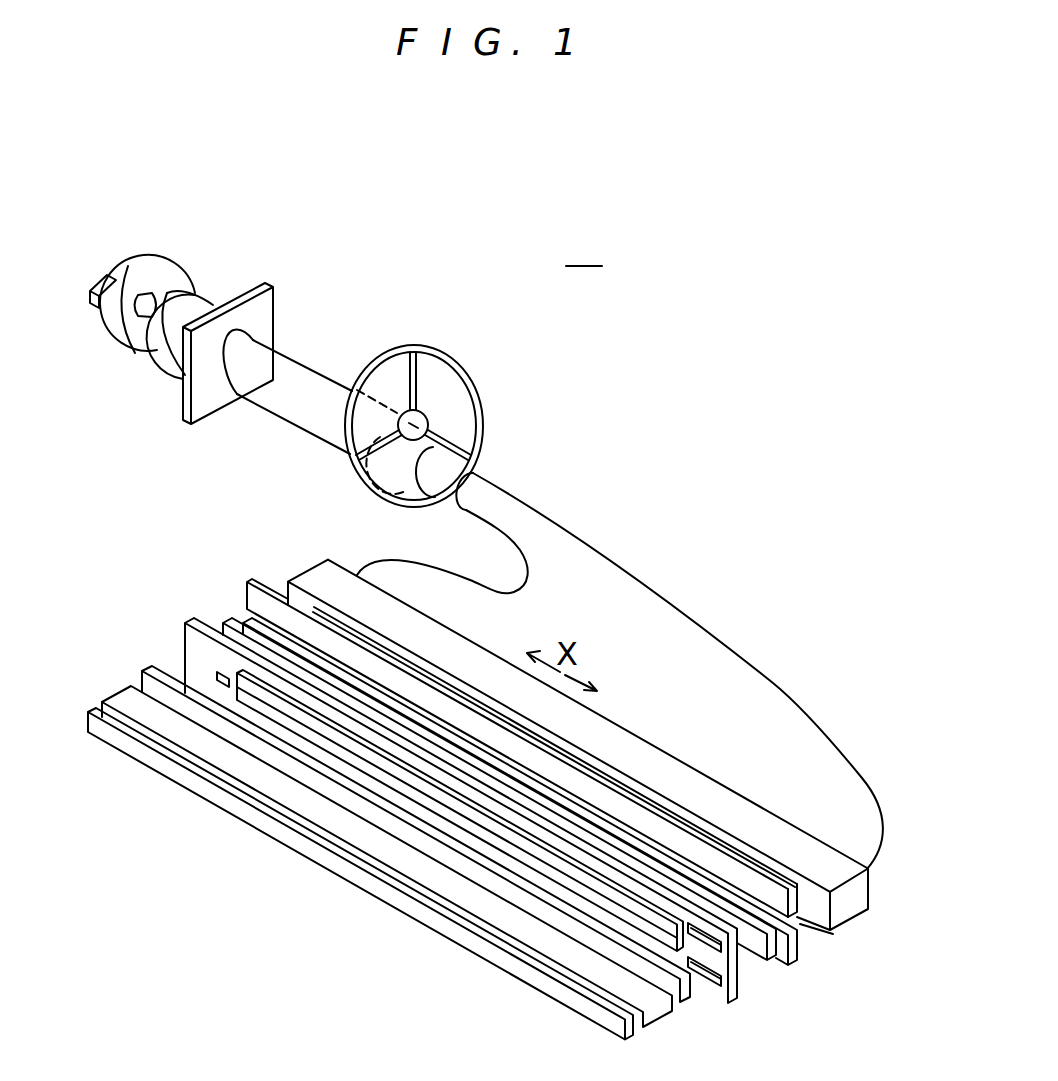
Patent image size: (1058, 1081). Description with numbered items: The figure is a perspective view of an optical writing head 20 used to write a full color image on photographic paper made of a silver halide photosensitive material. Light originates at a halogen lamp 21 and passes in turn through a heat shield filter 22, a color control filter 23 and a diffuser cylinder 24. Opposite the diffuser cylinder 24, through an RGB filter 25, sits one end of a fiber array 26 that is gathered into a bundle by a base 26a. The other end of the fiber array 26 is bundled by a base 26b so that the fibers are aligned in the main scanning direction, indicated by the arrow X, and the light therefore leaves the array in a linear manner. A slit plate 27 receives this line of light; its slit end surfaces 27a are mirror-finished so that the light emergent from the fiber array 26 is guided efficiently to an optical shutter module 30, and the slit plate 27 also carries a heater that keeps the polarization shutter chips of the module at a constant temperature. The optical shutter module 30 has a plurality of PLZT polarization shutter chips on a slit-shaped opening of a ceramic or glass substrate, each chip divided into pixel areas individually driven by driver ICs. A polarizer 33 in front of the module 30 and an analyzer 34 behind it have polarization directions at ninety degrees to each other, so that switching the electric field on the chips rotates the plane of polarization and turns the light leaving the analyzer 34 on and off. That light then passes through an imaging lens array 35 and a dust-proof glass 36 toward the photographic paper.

The optical writing head 20 is at (584, 251).
The halogen lamp 21 is at (150, 273).
The heat shield filter 22 is at (200, 291).
The color control filter 23 is at (264, 313).
The diffuser cylinder 24 is at (305, 368).
The RGB filter 25 is at (448, 357).
The fiber array 26 is at (730, 668).
The base 26a is at (438, 481).
The base 26b is at (320, 562).
The slit plate 27 is at (713, 867).
The slit end surfaces 27a is at (803, 934).
The optical shutter module 30 is at (737, 988).
The polarizer 33 is at (767, 946).
The analyzer 34 is at (688, 983).
The imaging lens array 35 is at (653, 1015).
The dust-proof glass 36 is at (498, 958).